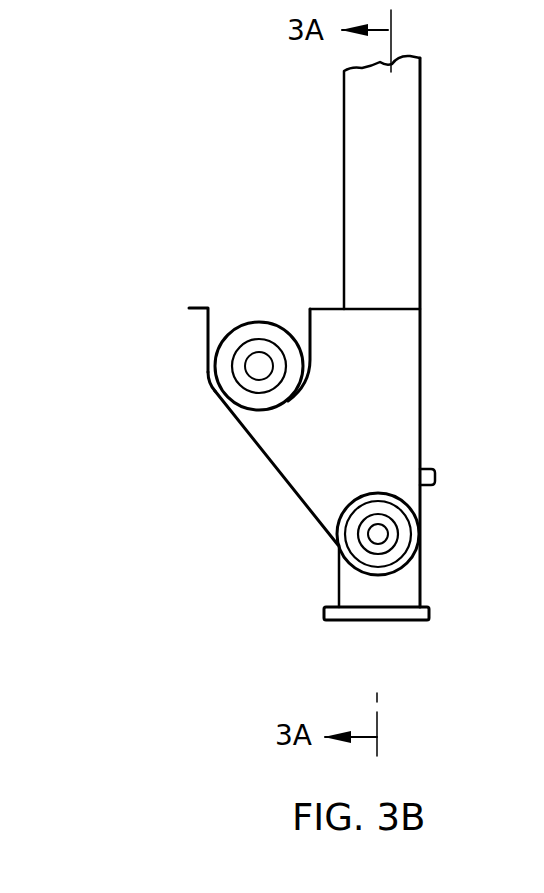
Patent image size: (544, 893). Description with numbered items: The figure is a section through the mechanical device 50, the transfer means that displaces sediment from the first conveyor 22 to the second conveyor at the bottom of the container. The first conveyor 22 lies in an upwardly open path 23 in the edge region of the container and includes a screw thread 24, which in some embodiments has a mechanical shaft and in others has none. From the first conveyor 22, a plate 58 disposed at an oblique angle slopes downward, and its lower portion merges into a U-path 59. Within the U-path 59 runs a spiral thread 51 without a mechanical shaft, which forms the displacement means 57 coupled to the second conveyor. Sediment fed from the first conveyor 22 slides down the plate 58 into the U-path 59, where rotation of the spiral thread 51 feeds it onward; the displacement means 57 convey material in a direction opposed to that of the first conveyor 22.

The first conveyor 22 is at (207, 346).
The upwardly open path 23 is at (210, 383).
The screw thread 24 is at (260, 321).
The mechanical device 50 is at (263, 498).
The spiral thread 51 is at (397, 518).
The displacement means 57 is at (418, 557).
The plate 58 is at (265, 452).
The U-path 59 is at (360, 562).